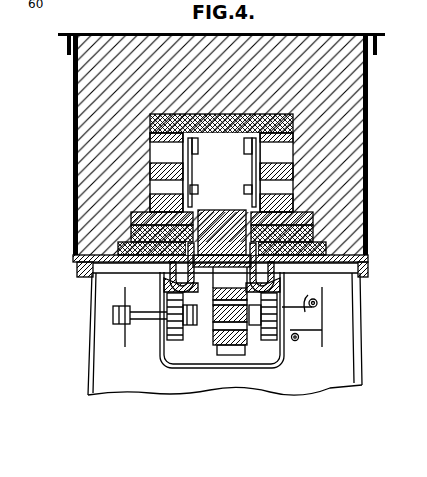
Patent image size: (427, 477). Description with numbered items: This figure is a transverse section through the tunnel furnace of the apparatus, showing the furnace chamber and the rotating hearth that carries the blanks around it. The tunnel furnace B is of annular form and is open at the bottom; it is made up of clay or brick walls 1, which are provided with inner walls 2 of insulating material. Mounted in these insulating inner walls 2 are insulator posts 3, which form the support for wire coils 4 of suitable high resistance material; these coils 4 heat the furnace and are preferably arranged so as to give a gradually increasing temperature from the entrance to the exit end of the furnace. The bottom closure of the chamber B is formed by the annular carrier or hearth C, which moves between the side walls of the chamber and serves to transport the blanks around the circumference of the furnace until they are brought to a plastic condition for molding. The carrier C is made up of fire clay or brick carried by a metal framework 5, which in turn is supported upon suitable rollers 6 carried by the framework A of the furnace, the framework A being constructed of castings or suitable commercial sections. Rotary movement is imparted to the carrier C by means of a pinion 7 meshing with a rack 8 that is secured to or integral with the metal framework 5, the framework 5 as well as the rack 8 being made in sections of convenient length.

The clay or brick walls 1 is at (92, 155).
The inner walls 2 is at (157, 172).
The insulator posts 3 is at (158, 190).
The wire coils 4 is at (194, 181).
The metal framework 5 is at (167, 275).
The rollers 6 is at (177, 338).
The pinion 7 is at (232, 349).
The rack 8 is at (231, 278).
The framework of the furnace A is at (86, 363).
The tunnel furnace B is at (348, 125).
The annular carrier C is at (232, 210).